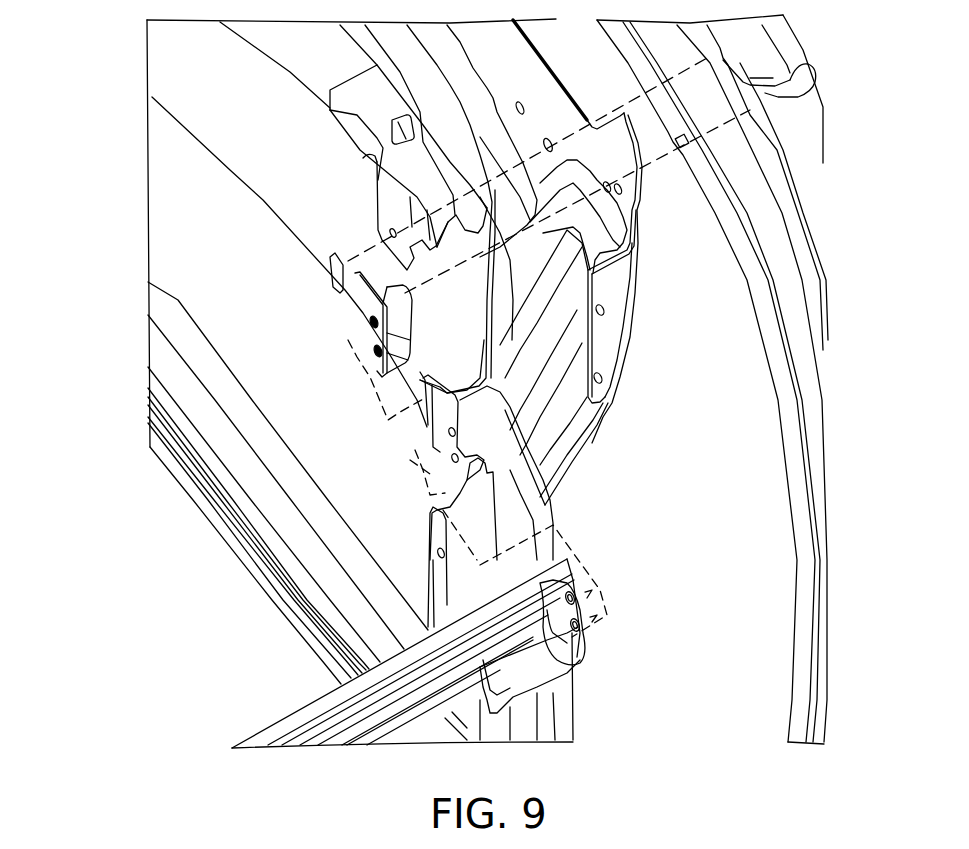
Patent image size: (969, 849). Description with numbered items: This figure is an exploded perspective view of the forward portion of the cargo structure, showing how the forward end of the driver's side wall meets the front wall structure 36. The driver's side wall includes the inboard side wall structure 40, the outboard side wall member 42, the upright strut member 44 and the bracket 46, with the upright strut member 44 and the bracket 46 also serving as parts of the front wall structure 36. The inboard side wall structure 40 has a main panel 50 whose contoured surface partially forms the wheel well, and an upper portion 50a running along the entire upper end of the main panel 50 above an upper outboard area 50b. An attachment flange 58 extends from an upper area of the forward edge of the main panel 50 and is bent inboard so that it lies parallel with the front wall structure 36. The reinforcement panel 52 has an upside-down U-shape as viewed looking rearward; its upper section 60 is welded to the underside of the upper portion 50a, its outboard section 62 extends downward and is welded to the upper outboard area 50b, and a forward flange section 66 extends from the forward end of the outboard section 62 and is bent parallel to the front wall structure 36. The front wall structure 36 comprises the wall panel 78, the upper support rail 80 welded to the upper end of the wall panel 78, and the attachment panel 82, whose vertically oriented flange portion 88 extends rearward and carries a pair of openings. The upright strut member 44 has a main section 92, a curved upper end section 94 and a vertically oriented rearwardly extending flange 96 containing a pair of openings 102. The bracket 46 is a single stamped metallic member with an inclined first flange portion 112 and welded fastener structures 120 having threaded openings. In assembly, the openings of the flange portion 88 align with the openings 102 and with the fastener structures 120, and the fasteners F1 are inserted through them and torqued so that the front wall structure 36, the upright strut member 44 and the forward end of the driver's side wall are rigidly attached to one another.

The front wall structure 36 is at (259, 721).
The inboard side wall structure 40 is at (640, 252).
The outboard side wall member 42 is at (812, 220).
The upright strut member 44 is at (437, 447).
The bracket 46 is at (360, 300).
The main panel 50 is at (262, 149).
The upper portion 50a is at (563, 56).
The upper outboard area 50b is at (610, 143).
The reinforcement panel 52 is at (365, 93).
The attachment flange 58 is at (607, 347).
The upper section 60 is at (417, 158).
The outboard section 62 is at (393, 213).
The forward flange section 66 is at (447, 384).
The wall panel 78 is at (450, 720).
The upper support rail 80 is at (320, 702).
The attachment panel 82 is at (513, 665).
The flange portion 88 is at (578, 606).
The main section 92 is at (443, 541).
The curved upper end section 94 is at (487, 430).
The rearwardly extending flange 96 is at (425, 433).
The openings 102 is at (455, 477).
The first flange portion 112 is at (402, 308).
The fastener structures 120 is at (371, 322).
The fasteners F1 is at (578, 658).